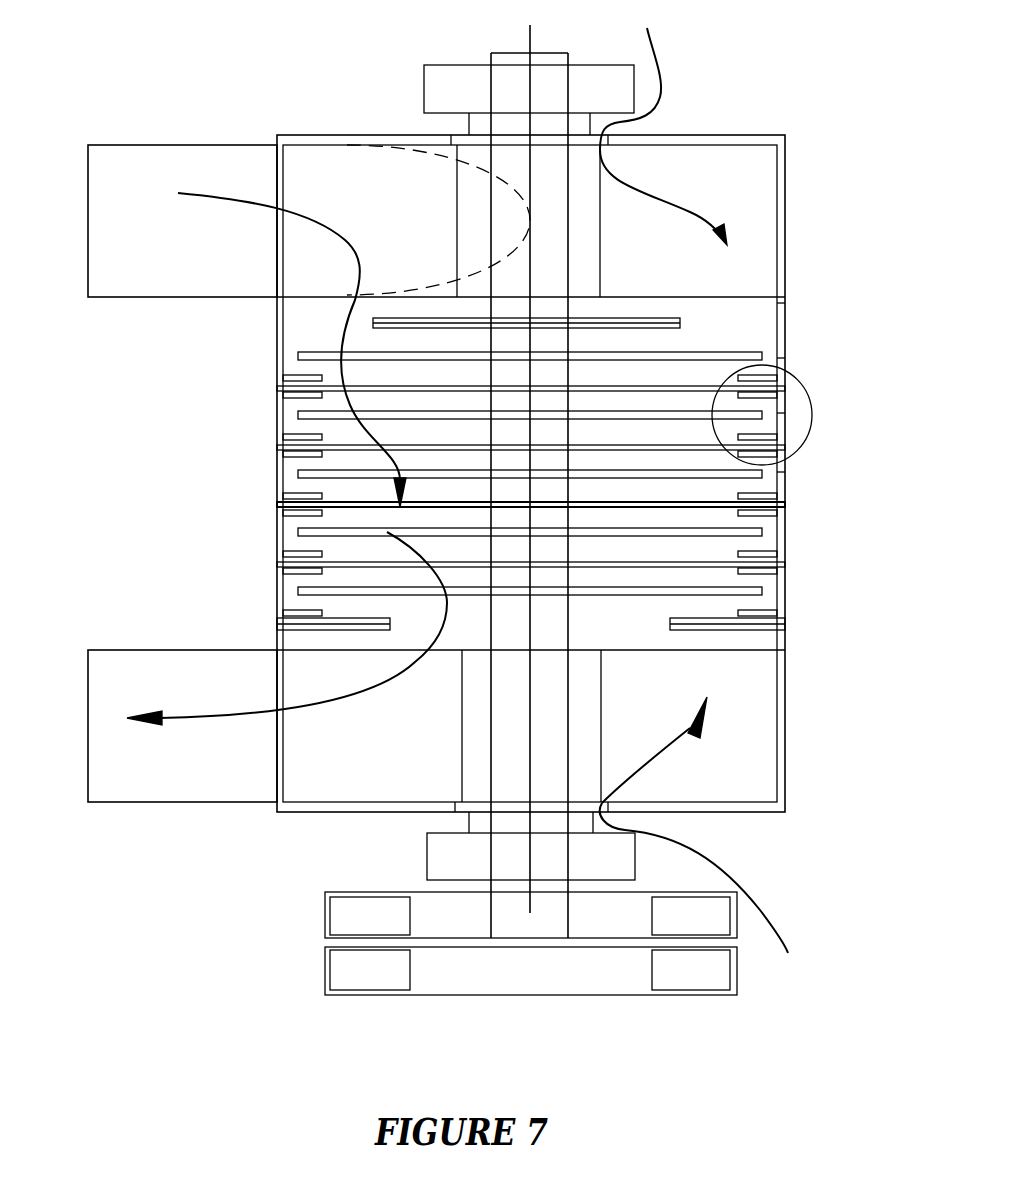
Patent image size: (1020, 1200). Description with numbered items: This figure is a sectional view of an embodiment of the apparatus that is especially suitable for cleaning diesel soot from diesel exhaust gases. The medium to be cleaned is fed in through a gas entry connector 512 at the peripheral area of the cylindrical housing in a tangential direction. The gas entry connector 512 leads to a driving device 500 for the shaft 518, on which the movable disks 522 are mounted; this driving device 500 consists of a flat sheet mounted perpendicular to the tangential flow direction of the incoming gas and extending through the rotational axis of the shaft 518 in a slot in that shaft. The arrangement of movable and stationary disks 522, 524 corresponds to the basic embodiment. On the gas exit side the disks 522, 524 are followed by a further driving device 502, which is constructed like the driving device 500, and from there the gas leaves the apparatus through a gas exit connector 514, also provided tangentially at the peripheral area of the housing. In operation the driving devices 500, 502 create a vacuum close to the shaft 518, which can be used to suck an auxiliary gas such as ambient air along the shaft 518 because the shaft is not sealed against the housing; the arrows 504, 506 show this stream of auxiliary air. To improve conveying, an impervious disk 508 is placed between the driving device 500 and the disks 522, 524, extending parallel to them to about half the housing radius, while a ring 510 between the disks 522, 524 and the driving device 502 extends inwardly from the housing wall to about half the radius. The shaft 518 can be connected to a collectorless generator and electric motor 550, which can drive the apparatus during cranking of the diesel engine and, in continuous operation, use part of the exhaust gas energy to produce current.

The driving device 500 is at (698, 160).
The driving device 502 is at (744, 708).
The arrow 504 is at (652, 47).
The arrow 506 is at (770, 912).
The impervious disk 508 is at (665, 322).
The ring 510 is at (770, 627).
The gas entry connector 512 is at (247, 303).
The gas exit connector 514 is at (262, 667).
The shaft 518 is at (493, 58).
The movable disks 522 is at (308, 351).
The stationary disks 524 is at (348, 390).
The electric motor 550 is at (737, 940).